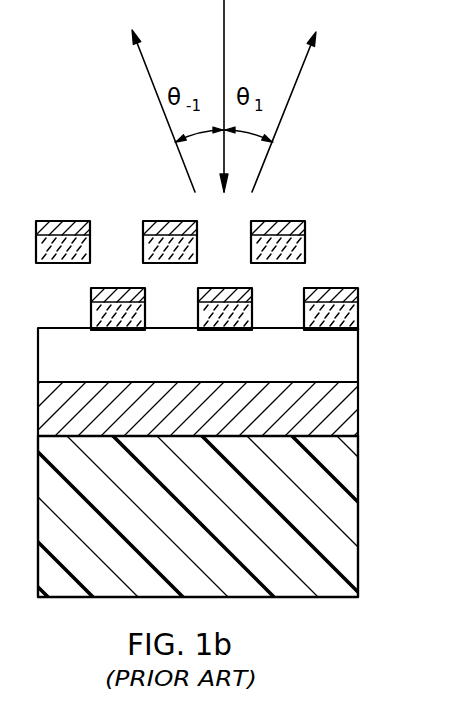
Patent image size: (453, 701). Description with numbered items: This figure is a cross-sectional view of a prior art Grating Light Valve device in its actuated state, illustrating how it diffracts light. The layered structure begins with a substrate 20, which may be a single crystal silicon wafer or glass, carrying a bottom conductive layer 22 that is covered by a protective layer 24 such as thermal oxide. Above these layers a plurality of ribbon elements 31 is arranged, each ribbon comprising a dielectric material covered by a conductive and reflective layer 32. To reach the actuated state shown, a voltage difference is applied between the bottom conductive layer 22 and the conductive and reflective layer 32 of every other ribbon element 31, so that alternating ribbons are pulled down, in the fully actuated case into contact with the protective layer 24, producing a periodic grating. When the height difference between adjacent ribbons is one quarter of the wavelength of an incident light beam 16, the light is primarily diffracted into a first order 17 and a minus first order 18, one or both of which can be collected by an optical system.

The incident light beam 16 is at (225, 25).
The 1st order 17 is at (292, 93).
The -1st order 18 is at (150, 77).
The substrate 20 is at (352, 483).
The bottom conductive layer 22 is at (353, 403).
The protective layer 24 is at (351, 359).
The ribbon elements 31 is at (302, 247).
The conductive and reflective layer 32 is at (50, 220).